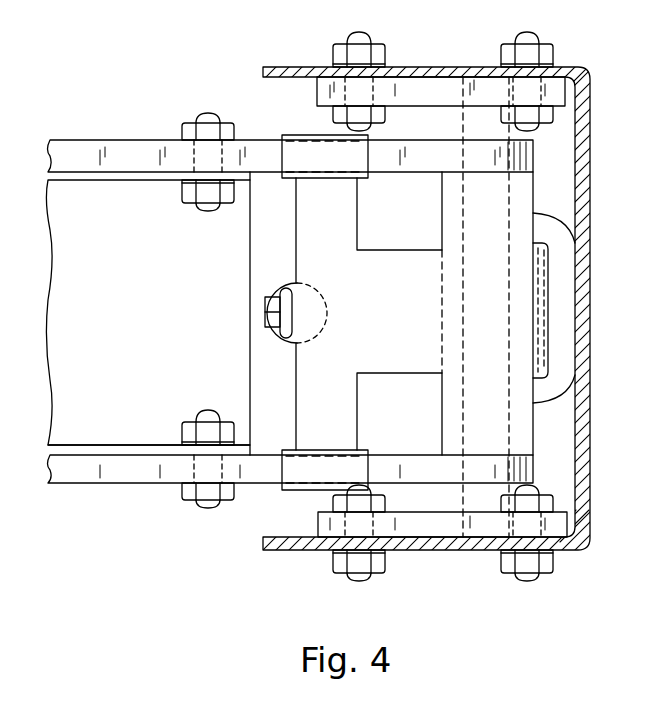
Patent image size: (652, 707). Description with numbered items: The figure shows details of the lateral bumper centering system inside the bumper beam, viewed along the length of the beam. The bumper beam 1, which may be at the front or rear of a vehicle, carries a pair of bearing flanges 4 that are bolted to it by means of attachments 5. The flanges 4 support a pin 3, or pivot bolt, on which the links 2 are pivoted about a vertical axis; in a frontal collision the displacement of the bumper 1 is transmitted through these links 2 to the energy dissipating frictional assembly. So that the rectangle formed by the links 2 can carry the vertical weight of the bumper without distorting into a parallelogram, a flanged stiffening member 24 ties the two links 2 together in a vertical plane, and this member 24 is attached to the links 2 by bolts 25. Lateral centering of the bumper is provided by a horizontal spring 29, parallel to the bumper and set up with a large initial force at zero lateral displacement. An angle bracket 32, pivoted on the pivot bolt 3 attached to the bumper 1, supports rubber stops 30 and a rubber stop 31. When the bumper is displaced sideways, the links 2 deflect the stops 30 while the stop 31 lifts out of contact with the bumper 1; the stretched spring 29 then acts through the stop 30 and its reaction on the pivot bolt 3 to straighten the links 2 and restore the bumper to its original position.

The bumper beam 1 is at (428, 67).
The links 2 is at (90, 140).
The pin 3 is at (462, 545).
The bearing flanges 4 is at (317, 92).
The attachments 5 is at (362, 32).
The stiffening member 24 is at (83, 445).
The bolts 25 is at (196, 122).
The horizontal spring 29 is at (266, 298).
The rubber stops 30 is at (284, 135).
The rubber stop 31 is at (562, 406).
The angle bracket 32 is at (413, 373).